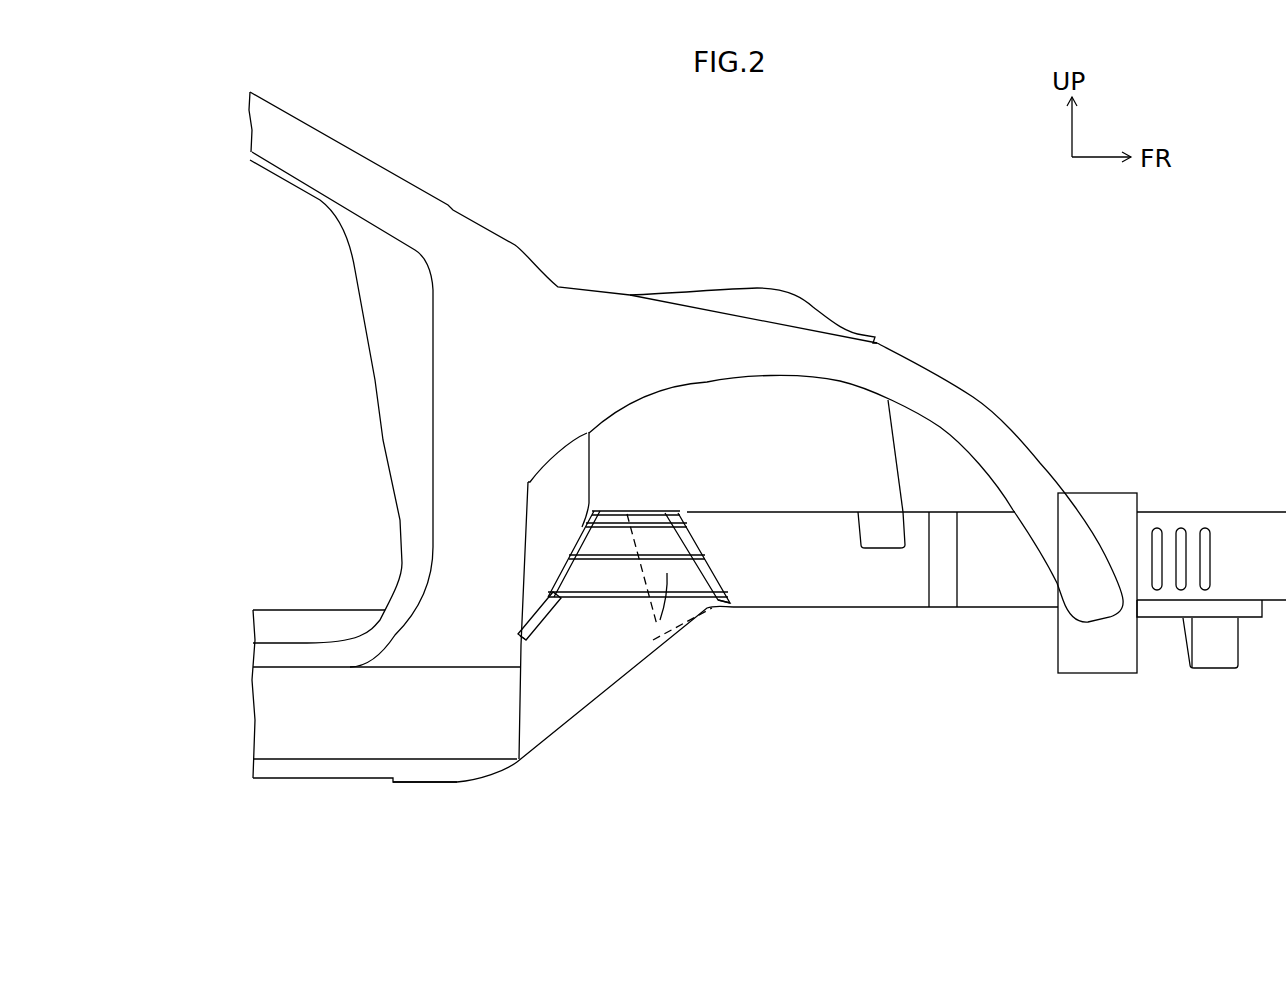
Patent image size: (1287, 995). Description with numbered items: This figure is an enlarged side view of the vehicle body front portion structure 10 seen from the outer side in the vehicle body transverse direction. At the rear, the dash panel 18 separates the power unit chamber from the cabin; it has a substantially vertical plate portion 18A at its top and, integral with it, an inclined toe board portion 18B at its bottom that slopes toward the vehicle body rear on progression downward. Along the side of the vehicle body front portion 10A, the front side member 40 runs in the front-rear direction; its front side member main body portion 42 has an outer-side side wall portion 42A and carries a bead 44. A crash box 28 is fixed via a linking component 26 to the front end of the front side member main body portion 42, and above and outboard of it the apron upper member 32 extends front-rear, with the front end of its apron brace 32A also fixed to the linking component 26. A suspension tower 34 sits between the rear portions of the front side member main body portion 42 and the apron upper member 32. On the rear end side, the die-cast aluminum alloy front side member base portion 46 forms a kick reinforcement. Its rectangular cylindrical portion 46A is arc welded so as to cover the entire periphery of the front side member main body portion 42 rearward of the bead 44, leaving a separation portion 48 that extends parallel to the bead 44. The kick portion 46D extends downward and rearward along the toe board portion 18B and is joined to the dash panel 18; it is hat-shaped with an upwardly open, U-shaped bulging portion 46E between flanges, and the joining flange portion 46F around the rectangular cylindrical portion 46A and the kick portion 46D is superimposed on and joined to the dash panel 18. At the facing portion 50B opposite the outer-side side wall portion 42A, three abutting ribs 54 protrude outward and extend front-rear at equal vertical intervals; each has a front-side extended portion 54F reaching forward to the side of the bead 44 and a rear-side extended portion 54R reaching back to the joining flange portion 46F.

The vehicle body front portion structure 10 is at (966, 221).
The vehicle body front portion 10A is at (944, 289).
The dash panel 18 is at (609, 449).
The vertical plate portion 18A is at (590, 472).
The toe board portion 18B is at (540, 617).
The linking component 26 is at (1112, 493).
The crash box 28 is at (1232, 520).
The apron upper member 32 is at (608, 286).
The apron brace 32A is at (942, 372).
The suspension tower 34 is at (803, 297).
The front side member 40 is at (886, 645).
The front side member main body portion 42 is at (821, 599).
The outer-side side wall portion 42A is at (779, 580).
The bead 44 is at (717, 573).
The front side member base portion 46 is at (648, 699).
The rectangular cylindrical portion 46A is at (650, 499).
The kick portion 46D is at (593, 702).
The bulging portion 46E is at (573, 732).
The joining flange portion 46F is at (603, 503).
The separation portion 48 is at (690, 582).
The facing portion 50B is at (660, 620).
The abutting ribs 54 is at (608, 551).
The front-side extended portion 54F is at (688, 519).
The rear-side extended portion 54R is at (578, 523).